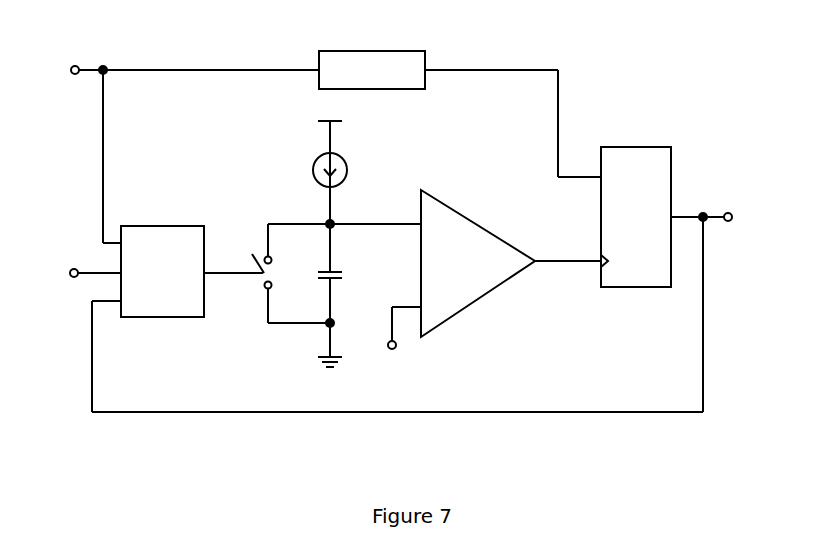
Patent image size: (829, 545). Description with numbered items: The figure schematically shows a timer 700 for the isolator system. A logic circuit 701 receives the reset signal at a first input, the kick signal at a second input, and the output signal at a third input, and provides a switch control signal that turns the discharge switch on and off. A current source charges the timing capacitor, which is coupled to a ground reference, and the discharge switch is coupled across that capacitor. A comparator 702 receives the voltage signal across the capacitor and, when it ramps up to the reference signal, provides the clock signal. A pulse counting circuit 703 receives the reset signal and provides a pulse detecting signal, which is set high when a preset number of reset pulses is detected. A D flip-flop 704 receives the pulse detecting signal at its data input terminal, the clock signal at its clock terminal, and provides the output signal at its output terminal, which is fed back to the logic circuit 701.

The timer 700 is at (762, 38).
The logic circuit 701 is at (162, 271).
The comparator 702 is at (490, 207).
The pulse counting circuit 703 is at (372, 70).
The D flip-flop 704 is at (629, 147).